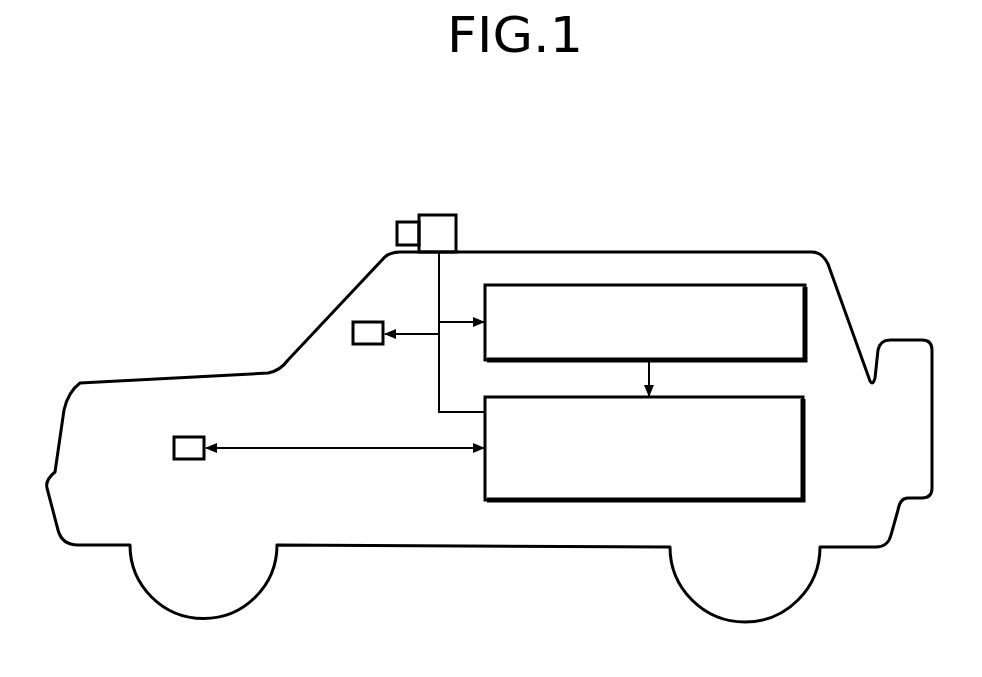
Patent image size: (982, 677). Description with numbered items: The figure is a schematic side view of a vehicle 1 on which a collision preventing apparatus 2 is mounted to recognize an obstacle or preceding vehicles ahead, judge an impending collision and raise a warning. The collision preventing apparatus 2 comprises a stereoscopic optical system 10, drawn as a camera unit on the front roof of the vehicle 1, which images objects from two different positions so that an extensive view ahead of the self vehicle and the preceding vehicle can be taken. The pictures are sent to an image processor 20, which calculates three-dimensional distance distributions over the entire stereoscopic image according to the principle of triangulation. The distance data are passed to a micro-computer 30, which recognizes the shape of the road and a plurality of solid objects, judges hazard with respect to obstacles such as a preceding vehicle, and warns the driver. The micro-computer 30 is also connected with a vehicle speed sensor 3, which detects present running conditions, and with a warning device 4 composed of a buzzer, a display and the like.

The vehicle 1 is at (663, 253).
The collision preventing apparatus 2 is at (514, 250).
The vehicle speed sensor 3 is at (192, 437).
The warning device 4 is at (355, 322).
The stereoscopic optical system 10 is at (440, 214).
The image processor 20 is at (748, 287).
The micro-computer 30 is at (620, 500).